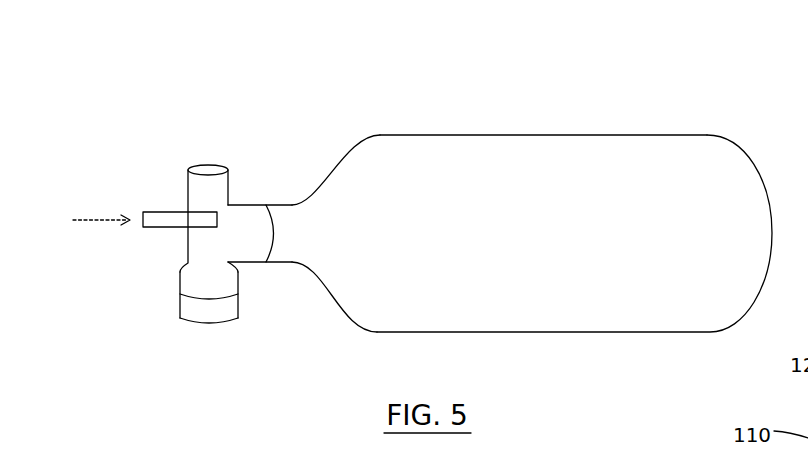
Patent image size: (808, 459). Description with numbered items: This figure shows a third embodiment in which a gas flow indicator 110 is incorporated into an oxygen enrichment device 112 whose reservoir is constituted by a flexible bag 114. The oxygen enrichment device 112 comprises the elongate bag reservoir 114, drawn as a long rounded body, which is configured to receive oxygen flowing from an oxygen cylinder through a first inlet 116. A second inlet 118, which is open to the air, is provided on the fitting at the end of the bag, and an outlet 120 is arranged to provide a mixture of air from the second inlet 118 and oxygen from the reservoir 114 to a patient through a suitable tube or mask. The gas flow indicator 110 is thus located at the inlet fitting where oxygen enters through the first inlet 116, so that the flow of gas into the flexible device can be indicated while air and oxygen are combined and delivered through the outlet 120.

The gas flow indicator 110 is at (174, 238).
The oxygen enrichment device 112 is at (500, 184).
The flexible bag 114 is at (640, 135).
The first inlet 116 is at (158, 229).
The second inlet 118 is at (229, 188).
The outlet 120 is at (233, 283).